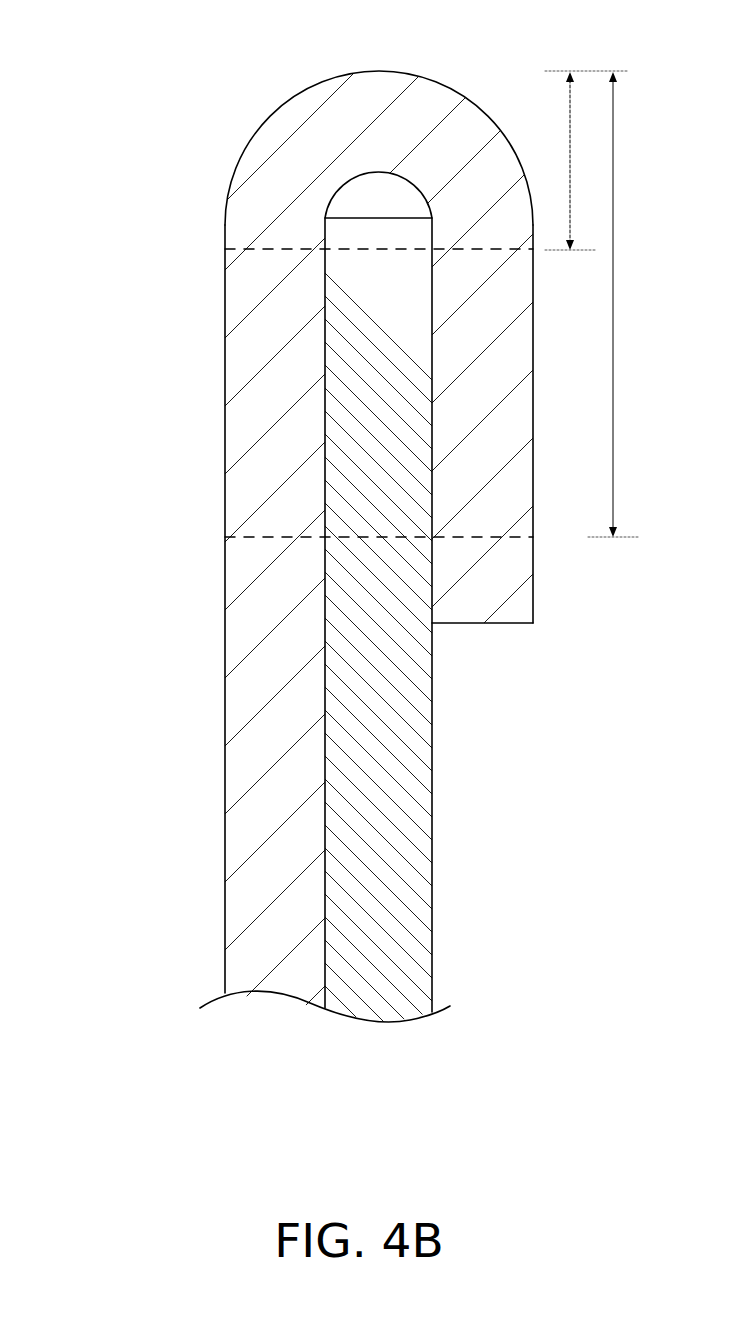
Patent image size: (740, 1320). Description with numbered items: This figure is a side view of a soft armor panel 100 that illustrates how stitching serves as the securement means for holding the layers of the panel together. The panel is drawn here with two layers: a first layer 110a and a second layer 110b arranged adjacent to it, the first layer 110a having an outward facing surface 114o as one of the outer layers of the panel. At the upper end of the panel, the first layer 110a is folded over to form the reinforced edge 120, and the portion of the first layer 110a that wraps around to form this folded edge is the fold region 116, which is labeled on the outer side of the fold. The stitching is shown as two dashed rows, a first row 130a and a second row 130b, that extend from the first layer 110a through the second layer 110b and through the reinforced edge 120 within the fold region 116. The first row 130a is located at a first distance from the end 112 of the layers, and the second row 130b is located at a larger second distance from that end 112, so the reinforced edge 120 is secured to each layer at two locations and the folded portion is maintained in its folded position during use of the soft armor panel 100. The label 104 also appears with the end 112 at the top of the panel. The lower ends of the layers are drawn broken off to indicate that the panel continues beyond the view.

The soft armor panel 100 is at (139, 84).
The distal end 104 is at (379, 117).
The end 112 is at (384, 46).
The first layer 110a is at (225, 710).
The second layer 110b is at (432, 770).
The outward facing surface 114o is at (330, 615).
The fold region 116 is at (535, 446).
The reinforced edge 120 is at (558, 574).
The first row of stitching 130a is at (260, 249).
The second row of stitching 130b is at (248, 534).